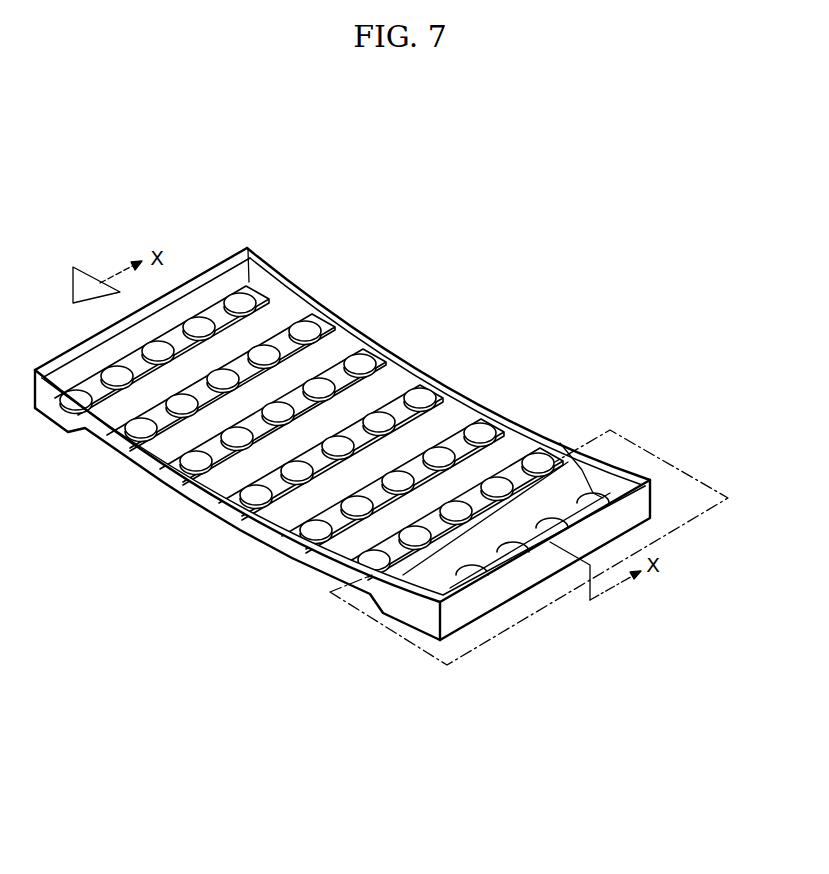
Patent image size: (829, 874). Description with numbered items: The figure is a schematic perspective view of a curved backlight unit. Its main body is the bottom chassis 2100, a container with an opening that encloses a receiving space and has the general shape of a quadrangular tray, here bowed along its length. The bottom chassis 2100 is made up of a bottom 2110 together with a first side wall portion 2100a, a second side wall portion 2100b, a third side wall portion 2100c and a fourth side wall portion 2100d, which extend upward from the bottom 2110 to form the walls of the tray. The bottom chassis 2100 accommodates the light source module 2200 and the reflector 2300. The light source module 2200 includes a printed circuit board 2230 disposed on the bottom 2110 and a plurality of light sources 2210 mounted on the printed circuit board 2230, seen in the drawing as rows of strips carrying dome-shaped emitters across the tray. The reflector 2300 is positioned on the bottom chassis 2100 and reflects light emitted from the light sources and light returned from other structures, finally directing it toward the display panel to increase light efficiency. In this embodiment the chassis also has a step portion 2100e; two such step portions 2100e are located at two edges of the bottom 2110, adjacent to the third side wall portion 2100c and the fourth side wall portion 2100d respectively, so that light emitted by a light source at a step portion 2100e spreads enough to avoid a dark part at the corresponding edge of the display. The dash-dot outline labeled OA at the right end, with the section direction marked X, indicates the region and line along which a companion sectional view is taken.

The bottom chassis 2100 is at (401, 514).
The first side wall portion 2100a is at (158, 466).
The second side wall portion 2100b is at (430, 383).
The third side wall portion 2100c is at (221, 278).
The fourth side wall portion 2100d is at (646, 498).
The step portion 2100e is at (280, 290).
The bottom 2110 is at (440, 433).
The light source module 2200 is at (309, 452).
The light source 2210 is at (233, 493).
The printed circuit board 2230 is at (283, 497).
The reflector 2300 is at (330, 355).
The optical axis OA is at (628, 436).